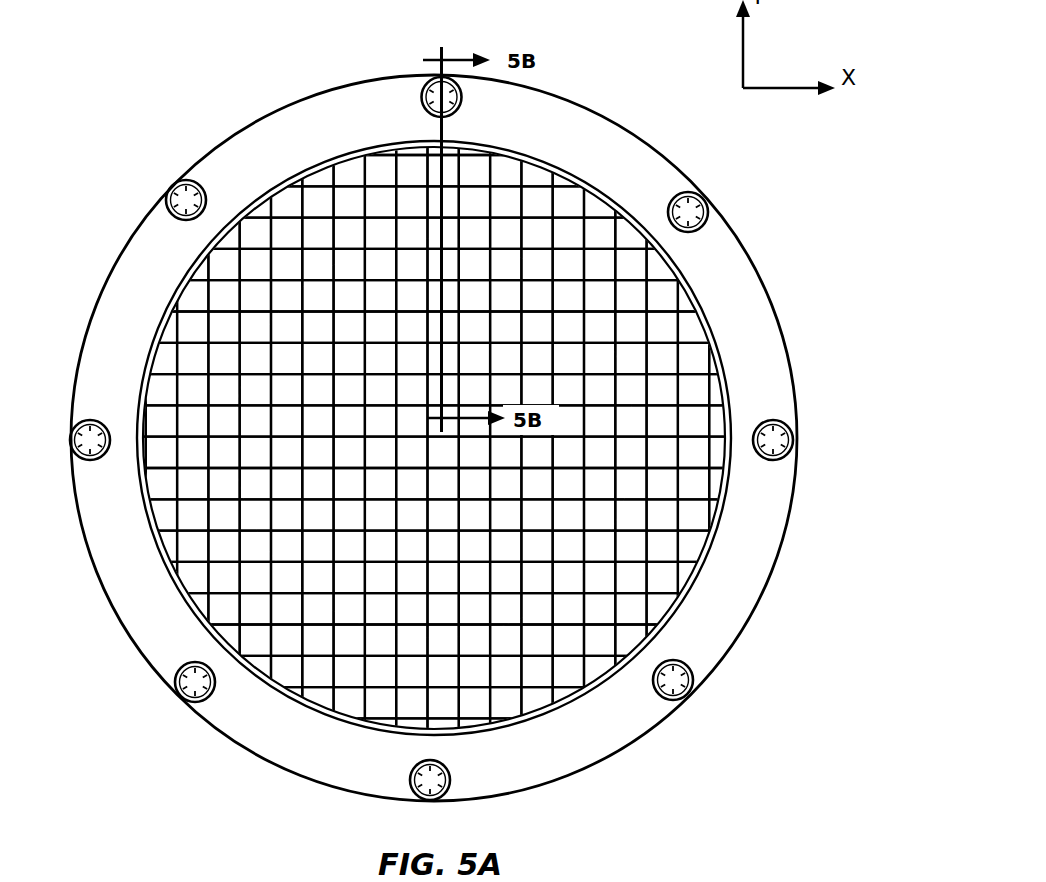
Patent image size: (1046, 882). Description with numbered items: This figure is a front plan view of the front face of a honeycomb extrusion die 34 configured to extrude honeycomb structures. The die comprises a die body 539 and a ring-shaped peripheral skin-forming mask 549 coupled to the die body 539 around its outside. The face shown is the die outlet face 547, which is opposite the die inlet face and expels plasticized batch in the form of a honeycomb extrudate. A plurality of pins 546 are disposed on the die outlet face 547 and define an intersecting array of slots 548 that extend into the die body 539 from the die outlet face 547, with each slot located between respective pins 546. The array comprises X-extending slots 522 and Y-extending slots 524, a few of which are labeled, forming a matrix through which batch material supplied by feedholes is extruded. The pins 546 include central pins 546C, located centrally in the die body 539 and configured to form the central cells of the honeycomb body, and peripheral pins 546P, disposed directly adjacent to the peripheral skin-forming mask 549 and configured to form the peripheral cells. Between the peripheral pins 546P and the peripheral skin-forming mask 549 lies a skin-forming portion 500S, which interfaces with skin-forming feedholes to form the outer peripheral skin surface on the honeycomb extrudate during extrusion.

The honeycomb extrusion die 34 is at (453, 433).
The peripheral skin-forming mask 549 is at (453, 438).
The slots 548 is at (440, 436).
The central pins 546C is at (440, 440).
The die outlet face 547 is at (693, 325).
The X-extending slots 522 is at (453, 440).
The peripheral pins 546P is at (660, 578).
The die body 539 is at (712, 549).
The pins 546 is at (431, 440).
The skin-forming portion 500S is at (453, 440).
The Y-extending slots 524 is at (240, 575).